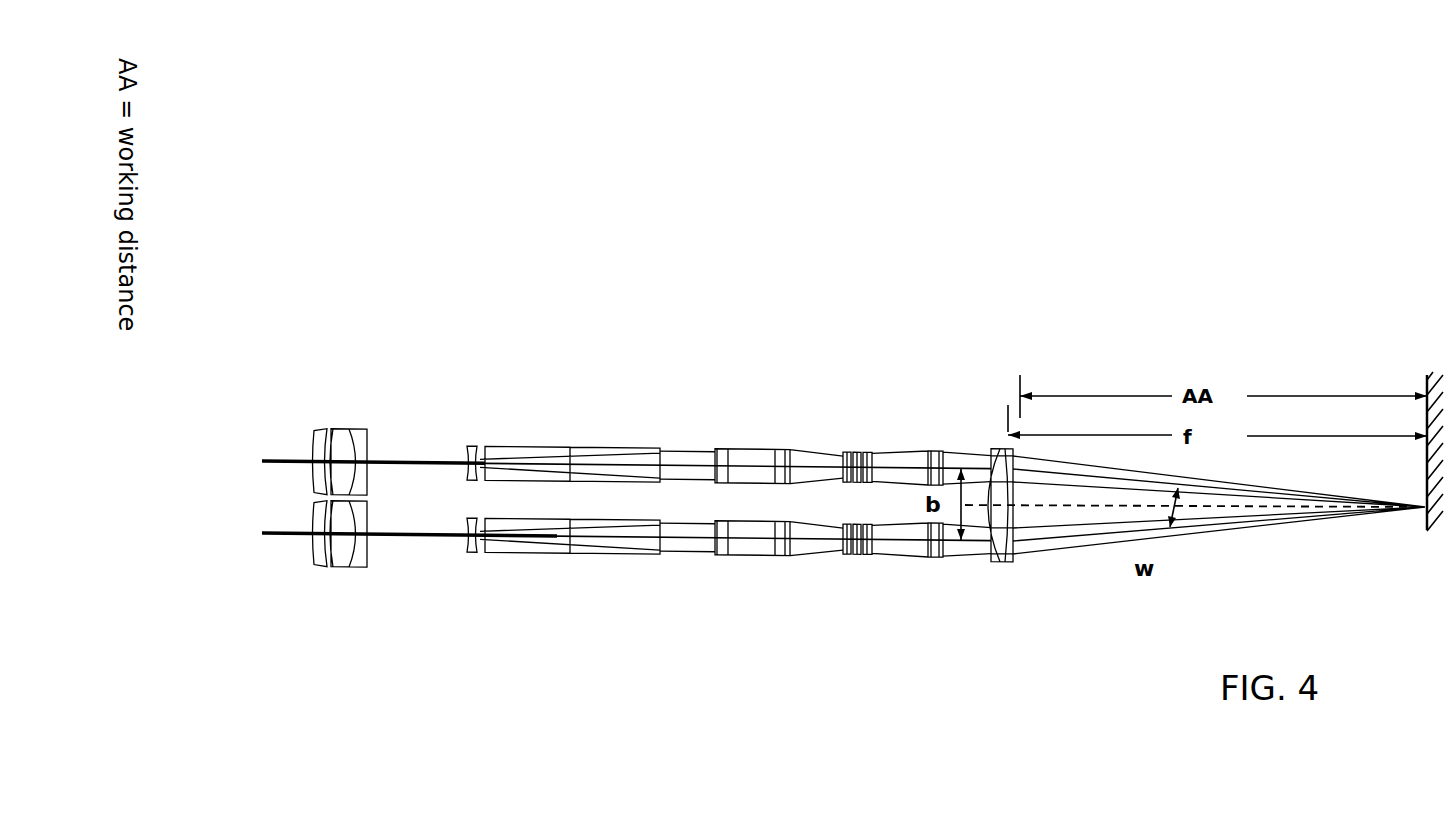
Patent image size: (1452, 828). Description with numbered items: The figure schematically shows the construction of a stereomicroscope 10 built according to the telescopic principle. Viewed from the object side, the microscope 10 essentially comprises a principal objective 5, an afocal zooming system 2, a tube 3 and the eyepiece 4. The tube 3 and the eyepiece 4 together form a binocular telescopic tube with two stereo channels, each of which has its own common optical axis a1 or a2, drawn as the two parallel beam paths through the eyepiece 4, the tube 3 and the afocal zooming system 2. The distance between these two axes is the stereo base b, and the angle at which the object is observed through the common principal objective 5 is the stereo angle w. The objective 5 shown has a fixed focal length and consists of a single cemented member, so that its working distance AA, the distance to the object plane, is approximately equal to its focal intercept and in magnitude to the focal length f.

The stereomicroscope 10 is at (892, 356).
The eyepiece 4 is at (370, 418).
The tube 3 is at (463, 415).
The optical axis a1 is at (762, 470).
The optical axis a2 is at (748, 540).
The afocal zooming system 2 is at (943, 410).
The principal objective 5 is at (1007, 547).